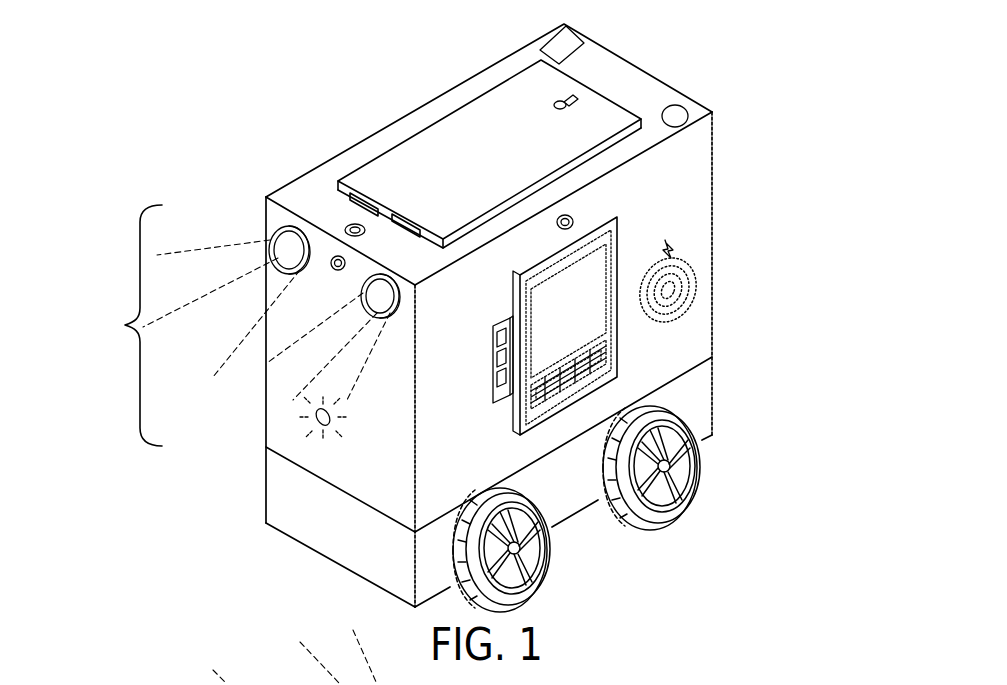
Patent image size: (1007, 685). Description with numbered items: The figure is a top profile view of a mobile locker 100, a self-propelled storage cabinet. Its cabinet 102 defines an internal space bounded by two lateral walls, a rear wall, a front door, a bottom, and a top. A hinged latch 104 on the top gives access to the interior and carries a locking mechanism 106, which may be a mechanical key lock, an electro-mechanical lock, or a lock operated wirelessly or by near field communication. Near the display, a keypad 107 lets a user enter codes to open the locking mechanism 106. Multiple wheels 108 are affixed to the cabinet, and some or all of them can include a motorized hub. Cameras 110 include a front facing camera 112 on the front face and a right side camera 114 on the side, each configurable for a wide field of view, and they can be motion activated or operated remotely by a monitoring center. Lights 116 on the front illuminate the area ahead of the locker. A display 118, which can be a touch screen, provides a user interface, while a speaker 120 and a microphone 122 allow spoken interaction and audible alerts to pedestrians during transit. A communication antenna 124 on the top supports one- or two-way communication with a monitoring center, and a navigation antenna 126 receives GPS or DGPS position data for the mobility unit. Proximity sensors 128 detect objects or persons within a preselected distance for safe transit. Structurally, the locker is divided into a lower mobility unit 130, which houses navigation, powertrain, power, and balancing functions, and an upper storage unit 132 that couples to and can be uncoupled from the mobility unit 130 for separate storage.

The mobile locker 100 is at (240, 578).
The cabinet 102 is at (713, 168).
The latch 104 is at (568, 73).
The locking mechanism 106 is at (572, 100).
The keypad 107 is at (492, 396).
The wheels 108 is at (538, 580).
The cameras 110 is at (355, 226).
The front facing camera 112 is at (336, 258).
The right side camera 114 is at (573, 220).
The lights 116 is at (277, 242).
The display 118 is at (618, 250).
The speaker 120 is at (697, 278).
The microphone 122 is at (675, 245).
The communication antenna 124 is at (688, 108).
The navigation antenna 126 is at (540, 43).
The proximity sensors 128 is at (316, 412).
The mobility unit 130 is at (277, 497).
The storage unit 132 is at (126, 325).